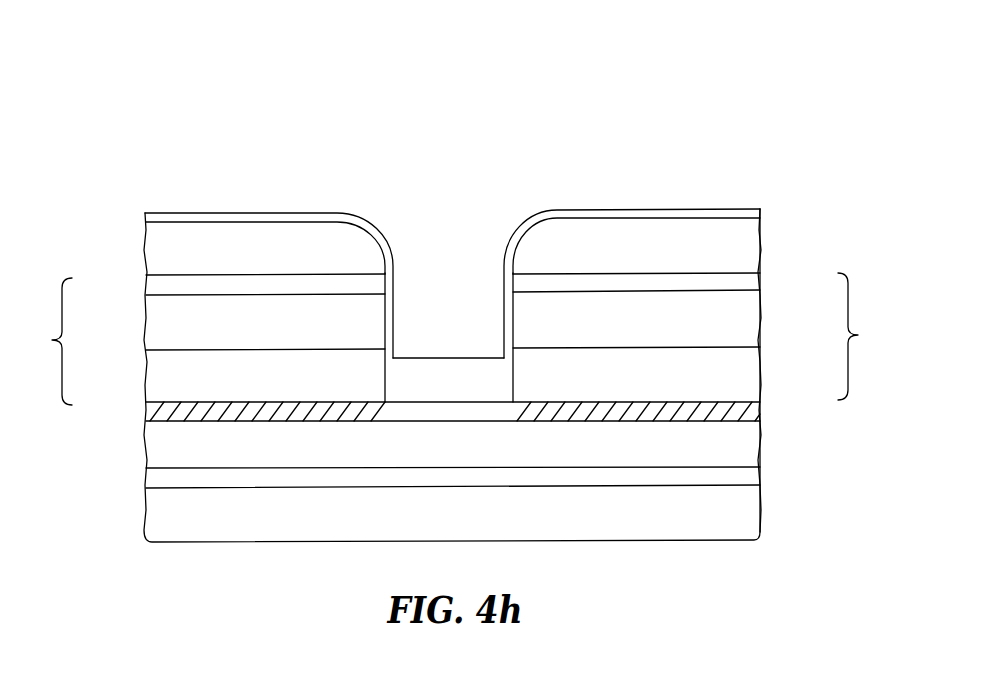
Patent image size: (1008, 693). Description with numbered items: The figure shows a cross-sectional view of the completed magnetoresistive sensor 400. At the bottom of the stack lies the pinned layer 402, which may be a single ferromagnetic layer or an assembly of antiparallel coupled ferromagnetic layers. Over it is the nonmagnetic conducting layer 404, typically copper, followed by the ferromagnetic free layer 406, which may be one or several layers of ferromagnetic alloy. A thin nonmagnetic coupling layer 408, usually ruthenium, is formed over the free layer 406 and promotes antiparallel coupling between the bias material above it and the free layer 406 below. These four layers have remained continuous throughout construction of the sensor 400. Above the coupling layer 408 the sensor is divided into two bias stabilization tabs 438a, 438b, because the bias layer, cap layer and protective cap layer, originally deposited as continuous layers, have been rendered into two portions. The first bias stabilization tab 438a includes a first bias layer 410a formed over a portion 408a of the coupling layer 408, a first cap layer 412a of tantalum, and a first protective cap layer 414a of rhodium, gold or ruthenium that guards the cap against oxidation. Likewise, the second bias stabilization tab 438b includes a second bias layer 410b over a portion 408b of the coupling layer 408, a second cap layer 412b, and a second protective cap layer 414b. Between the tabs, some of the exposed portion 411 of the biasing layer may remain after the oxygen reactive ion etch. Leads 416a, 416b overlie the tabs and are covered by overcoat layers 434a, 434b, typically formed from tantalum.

The magnetoresistive sensor 400 is at (677, 108).
The pinned layer 402 is at (765, 513).
The nonmagnetic conducting layer 404 is at (765, 476).
The free layer 406 is at (765, 442).
The nonmagnetic coupling layer 408 is at (770, 410).
The portion of nonmagnetic coupling layer 408a is at (607, 421).
The portion of nonmagnetic coupling layer 408b is at (268, 421).
The first bias layer 410a is at (762, 377).
The second bias layer 410b is at (146, 382).
The exposed portion of the biasing layer 411 is at (447, 358).
The first cap layer 412a is at (762, 323).
The second cap layer 412b is at (146, 325).
The first protective cap layer 414a is at (762, 280).
The second protective cap layer 414b is at (146, 285).
The lead 416a is at (762, 247).
The lead 416b is at (146, 247).
The overcoat layer 434a is at (648, 210).
The overcoat layer 434b is at (243, 213).
The first bias stabilization tab 438a is at (877, 336).
The second bias stabilization tab 438b is at (36, 341).